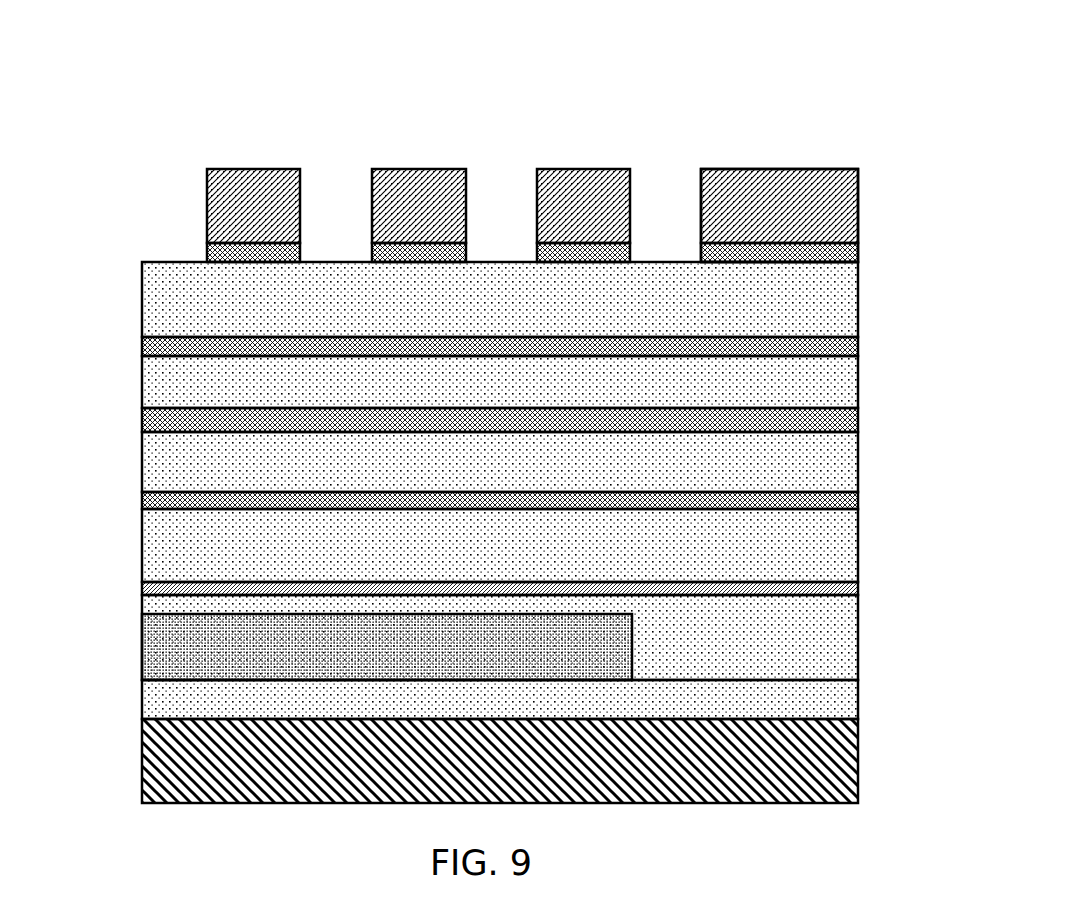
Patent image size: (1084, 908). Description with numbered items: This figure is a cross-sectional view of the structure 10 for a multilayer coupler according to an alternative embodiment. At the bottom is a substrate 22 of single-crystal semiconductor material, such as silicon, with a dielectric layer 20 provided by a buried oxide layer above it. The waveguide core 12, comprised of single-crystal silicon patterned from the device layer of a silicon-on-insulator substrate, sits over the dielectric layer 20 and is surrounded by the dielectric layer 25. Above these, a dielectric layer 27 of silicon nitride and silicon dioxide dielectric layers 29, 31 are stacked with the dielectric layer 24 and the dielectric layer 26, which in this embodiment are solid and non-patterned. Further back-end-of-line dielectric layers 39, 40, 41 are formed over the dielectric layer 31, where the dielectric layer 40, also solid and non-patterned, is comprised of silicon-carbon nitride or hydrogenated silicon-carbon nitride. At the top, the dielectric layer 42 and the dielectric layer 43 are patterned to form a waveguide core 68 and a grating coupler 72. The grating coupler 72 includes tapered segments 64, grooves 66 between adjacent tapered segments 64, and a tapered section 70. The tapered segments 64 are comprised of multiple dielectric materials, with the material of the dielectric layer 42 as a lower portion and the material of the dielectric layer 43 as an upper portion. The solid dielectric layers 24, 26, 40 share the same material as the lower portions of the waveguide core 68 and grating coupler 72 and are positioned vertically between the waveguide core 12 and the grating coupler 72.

The structure 10 is at (148, 136).
The waveguide core 12 is at (187, 650).
The dielectric layer 20 is at (820, 700).
The substrate 22 is at (825, 770).
The dielectric layer 24 is at (185, 500).
The dielectric layer 25 is at (820, 645).
The patterned dielectric layer 26 is at (185, 420).
The dielectric layer 27 is at (183, 592).
The dielectric layer 29 is at (826, 550).
The dielectric layer 31 is at (832, 461).
The dielectric layer 39 is at (828, 380).
The dielectric layer 40 is at (172, 347).
The dielectric layer 41 is at (820, 298).
The dielectric layer 42 is at (190, 250).
The dielectric layer 43 is at (874, 190).
The tapered segments 64 is at (255, 208).
The grooves 66 is at (502, 204).
The waveguide core 68 is at (768, 223).
The tapered section 70 is at (710, 87).
The grating coupler 72 is at (208, 87).